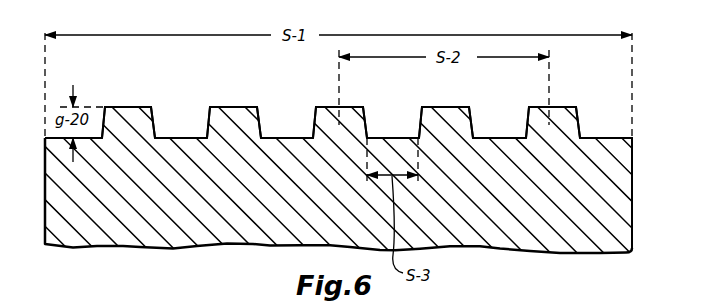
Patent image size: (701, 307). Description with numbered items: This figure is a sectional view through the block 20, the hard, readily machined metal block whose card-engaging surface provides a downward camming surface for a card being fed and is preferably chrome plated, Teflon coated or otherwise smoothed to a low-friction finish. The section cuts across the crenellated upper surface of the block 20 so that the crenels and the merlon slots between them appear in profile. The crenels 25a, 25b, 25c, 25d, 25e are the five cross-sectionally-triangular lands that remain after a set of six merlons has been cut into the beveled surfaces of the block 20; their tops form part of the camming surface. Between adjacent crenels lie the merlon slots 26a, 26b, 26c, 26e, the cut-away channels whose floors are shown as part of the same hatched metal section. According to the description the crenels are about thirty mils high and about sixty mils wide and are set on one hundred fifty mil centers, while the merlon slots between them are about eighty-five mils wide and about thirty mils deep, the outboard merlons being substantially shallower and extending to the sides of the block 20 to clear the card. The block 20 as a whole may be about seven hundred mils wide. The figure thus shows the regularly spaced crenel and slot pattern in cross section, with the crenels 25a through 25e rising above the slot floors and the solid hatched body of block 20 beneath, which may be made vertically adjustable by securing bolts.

The block 20 is at (97, 250).
The crenel 25a is at (552, 106).
The crenel 25b is at (446, 122).
The crenel 25c is at (340, 122).
The crenel 25d is at (229, 106).
The crenel 25e is at (123, 106).
The groove / recess 26a is at (486, 136).
The groove / recess 26b is at (382, 136).
The groove / recess 26c is at (278, 136).
The groove / recess 26e is at (160, 136).